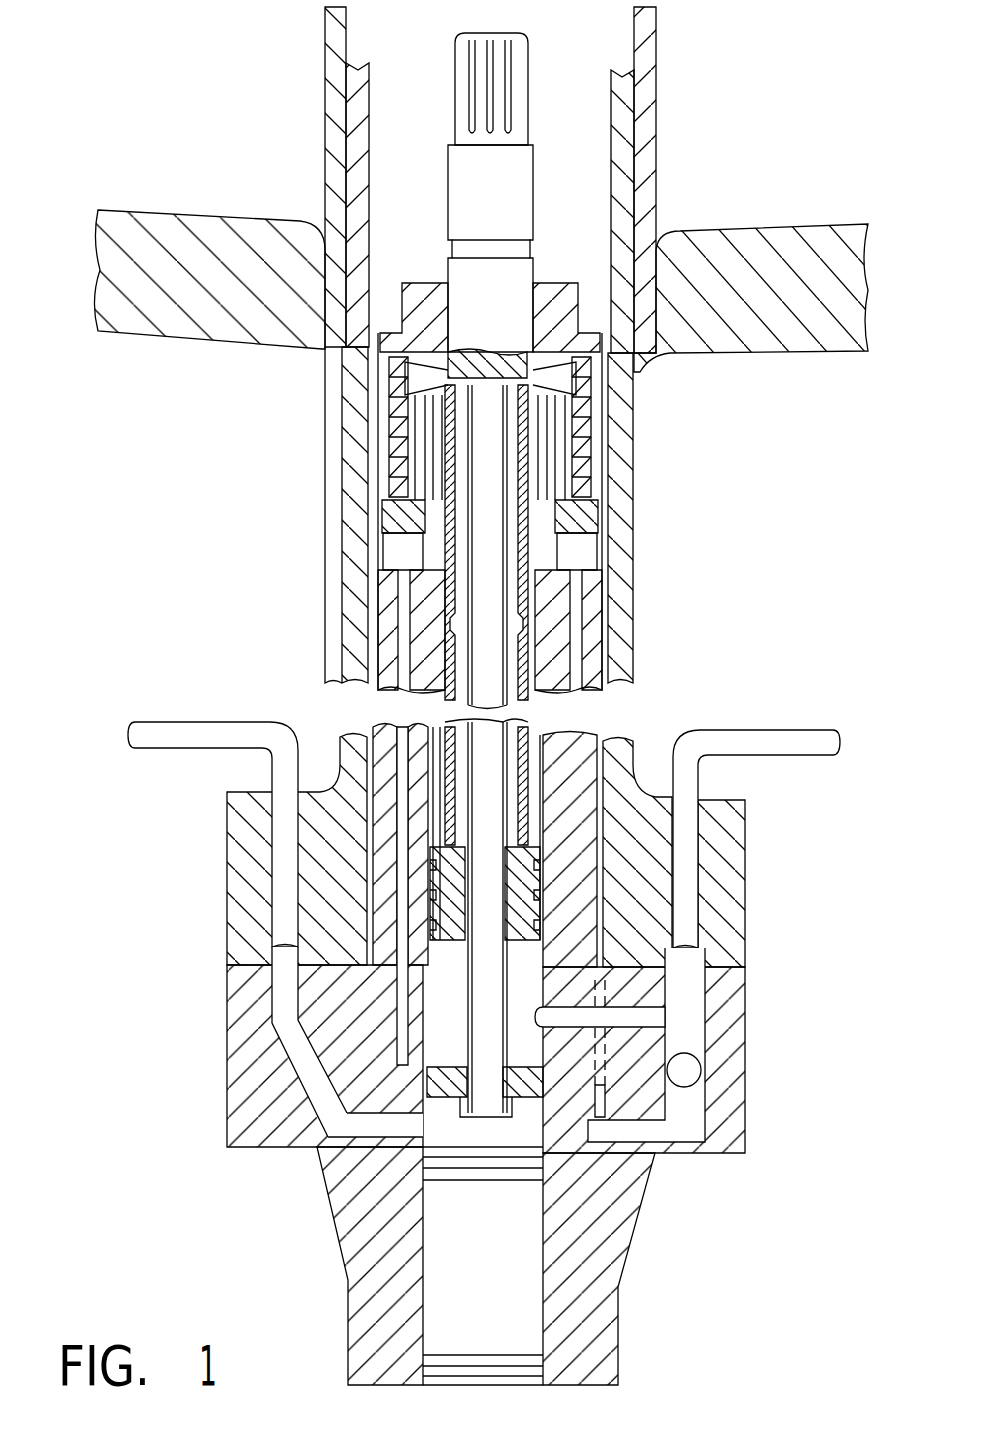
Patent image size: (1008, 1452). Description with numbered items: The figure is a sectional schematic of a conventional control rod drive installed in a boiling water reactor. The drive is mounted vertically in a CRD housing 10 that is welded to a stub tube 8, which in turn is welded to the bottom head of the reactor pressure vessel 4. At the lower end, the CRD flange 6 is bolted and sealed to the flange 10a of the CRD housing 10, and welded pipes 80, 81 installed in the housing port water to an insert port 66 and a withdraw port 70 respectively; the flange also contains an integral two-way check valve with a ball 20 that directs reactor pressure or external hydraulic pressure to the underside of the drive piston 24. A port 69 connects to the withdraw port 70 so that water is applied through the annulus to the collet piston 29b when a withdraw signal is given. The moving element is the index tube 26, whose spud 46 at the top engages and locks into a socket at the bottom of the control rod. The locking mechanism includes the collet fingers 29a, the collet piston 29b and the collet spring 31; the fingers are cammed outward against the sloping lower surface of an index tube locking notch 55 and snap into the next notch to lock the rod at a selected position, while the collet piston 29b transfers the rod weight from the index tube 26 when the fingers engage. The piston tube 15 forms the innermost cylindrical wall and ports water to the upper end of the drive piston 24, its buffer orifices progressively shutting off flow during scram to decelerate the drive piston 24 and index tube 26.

The reactor pressure vessel 4 is at (233, 218).
The stub tube 8 is at (660, 118).
The CRD housing 10 is at (348, 632).
The spud 46 is at (528, 52).
The collet spring 31 is at (372, 462).
The collet fingers 29a is at (573, 387).
The collet piston 29b is at (378, 524).
The index tube 26 is at (527, 650).
The piston tube 15 is at (493, 600).
The flange of the CRD housing 10a is at (735, 935).
The hydraulic system line (welded pipe) 81 is at (172, 722).
The hydraulic system line (welded pipe) 80 is at (785, 730).
The withdraw port 70 is at (300, 1003).
The port 69 is at (358, 1075).
The insert port 66 is at (700, 963).
The ball 20 is at (692, 1040).
The CRD flange 6 is at (622, 1320).
The index tube locking notch 55 is at (530, 742).
The drive piston 24 is at (520, 900).